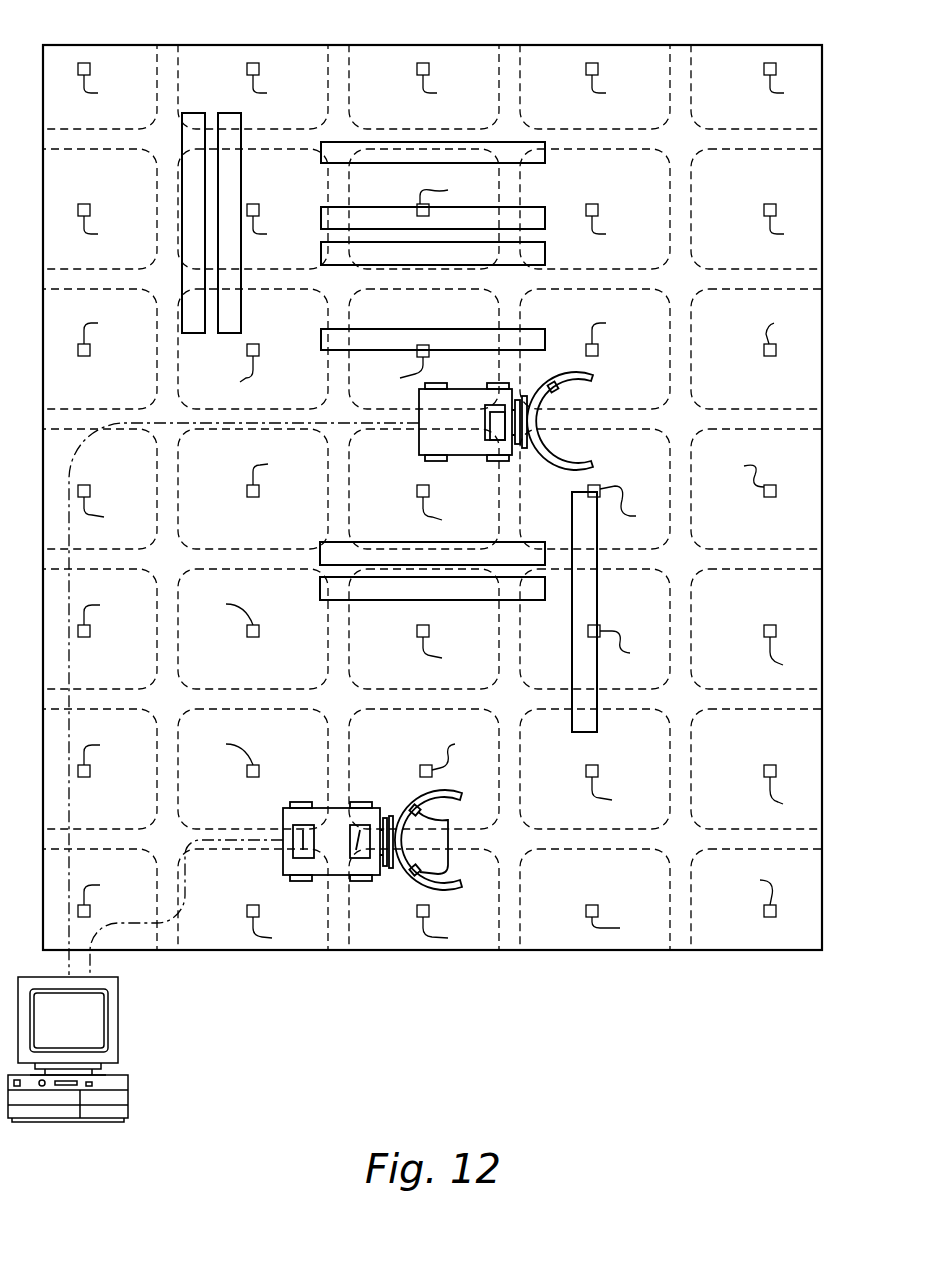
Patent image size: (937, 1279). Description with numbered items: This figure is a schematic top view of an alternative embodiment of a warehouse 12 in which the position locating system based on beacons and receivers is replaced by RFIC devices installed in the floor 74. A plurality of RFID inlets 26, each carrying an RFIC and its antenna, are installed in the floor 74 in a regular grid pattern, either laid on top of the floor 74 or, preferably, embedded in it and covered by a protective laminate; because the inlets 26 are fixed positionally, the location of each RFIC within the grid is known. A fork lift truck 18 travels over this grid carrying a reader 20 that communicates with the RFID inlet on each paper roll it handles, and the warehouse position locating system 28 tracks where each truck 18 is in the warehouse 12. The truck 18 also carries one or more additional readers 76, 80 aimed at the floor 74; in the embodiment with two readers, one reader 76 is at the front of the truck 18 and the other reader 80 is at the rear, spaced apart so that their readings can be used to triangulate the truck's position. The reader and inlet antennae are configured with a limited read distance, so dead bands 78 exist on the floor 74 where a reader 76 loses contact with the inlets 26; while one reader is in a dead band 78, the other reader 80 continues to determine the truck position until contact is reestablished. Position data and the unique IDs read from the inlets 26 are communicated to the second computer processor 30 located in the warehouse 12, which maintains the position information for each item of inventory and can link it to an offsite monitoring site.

The warehouse 12 is at (522, 918).
The fork lift truck 18 is at (410, 470).
The reader 20 is at (558, 392).
The RFID inlet 26 is at (448, 505).
The warehouse position locating system 28 is at (351, 1064).
The second computer processor 30 is at (132, 1093).
The floor 74 is at (382, 926).
The additional reader 76 is at (490, 420).
The dead band 78 is at (340, 128).
The additional reader 80 is at (304, 835).